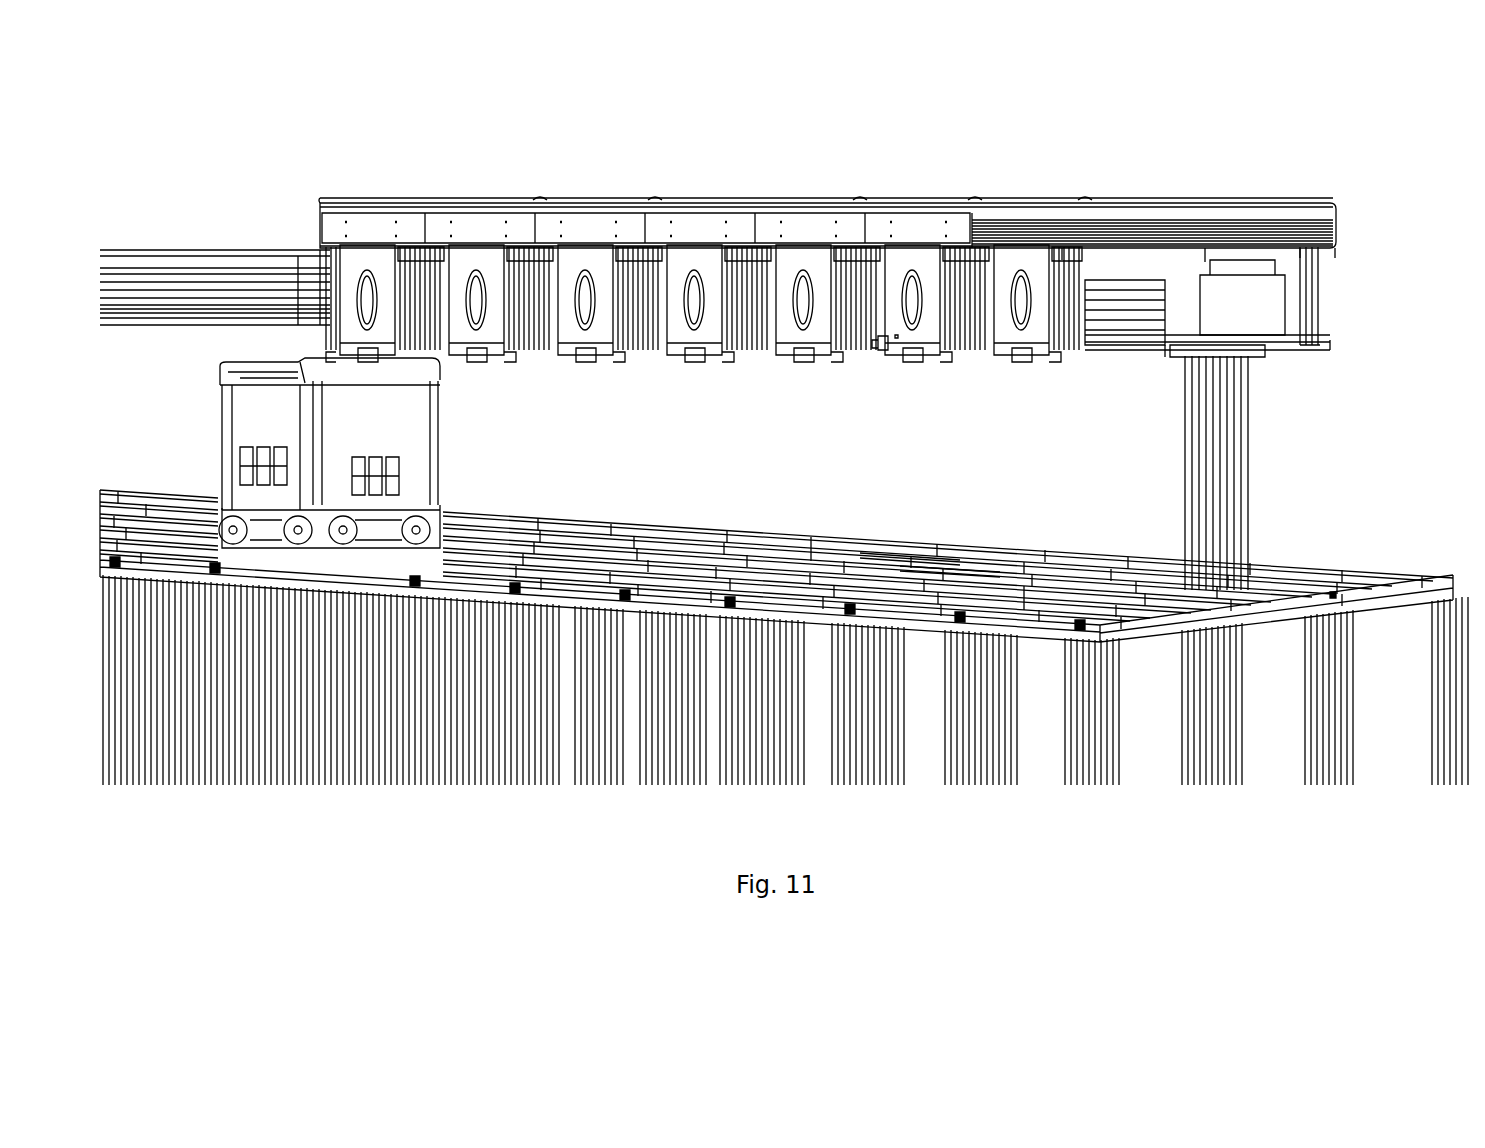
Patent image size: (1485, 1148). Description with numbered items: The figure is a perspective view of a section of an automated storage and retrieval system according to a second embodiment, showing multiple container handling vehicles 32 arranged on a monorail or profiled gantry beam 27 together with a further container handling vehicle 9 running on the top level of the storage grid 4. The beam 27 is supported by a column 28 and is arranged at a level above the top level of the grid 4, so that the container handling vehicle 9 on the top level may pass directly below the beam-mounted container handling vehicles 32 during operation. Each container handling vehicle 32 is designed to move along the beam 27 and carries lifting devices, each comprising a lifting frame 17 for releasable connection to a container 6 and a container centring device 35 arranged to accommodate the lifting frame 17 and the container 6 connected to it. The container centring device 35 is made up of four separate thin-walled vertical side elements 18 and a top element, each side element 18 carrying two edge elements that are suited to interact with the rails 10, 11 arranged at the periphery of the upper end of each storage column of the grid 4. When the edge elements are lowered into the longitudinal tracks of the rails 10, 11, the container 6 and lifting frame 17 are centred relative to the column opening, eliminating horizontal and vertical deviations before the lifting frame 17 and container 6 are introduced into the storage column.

The beam 27 is at (207, 288).
The container handling vehicle 32 is at (925, 222).
The lifting frame 17 is at (980, 258).
The container handling vehicle 9 is at (215, 432).
The container centring device 35 is at (892, 338).
The container 6 is at (963, 315).
The side element 18 is at (925, 338).
The rail 11 is at (908, 560).
The rail 10 is at (940, 568).
The column 28 is at (1218, 468).
The storage grid 4 is at (1418, 552).